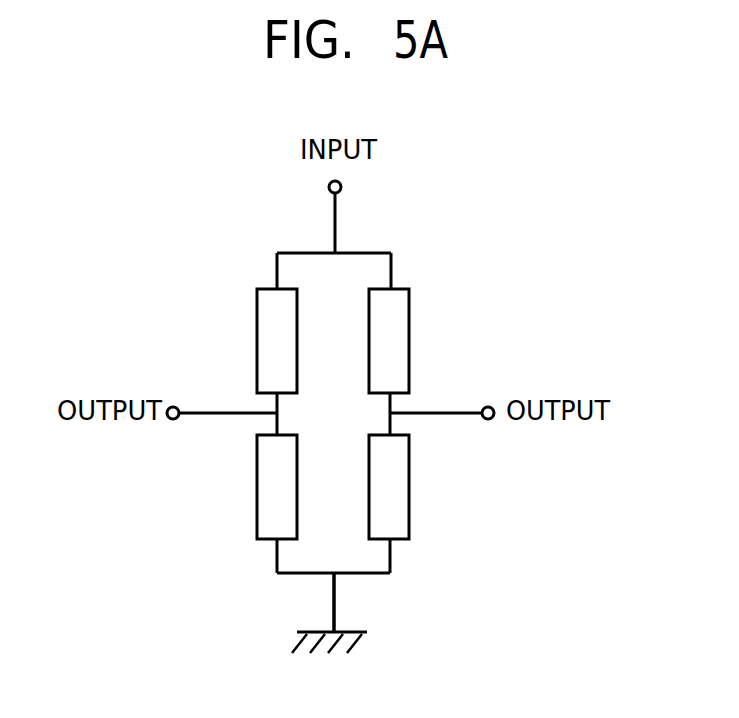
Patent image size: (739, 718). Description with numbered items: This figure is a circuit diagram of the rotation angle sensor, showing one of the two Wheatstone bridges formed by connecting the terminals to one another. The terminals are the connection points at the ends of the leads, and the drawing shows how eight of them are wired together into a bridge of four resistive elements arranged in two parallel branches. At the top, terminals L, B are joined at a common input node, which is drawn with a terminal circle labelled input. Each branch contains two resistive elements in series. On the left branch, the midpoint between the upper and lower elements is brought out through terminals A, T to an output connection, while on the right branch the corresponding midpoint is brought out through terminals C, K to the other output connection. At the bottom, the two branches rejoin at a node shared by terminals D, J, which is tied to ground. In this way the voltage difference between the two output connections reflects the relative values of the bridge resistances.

The terminal L is at (319, 202).
The terminal B is at (334, 241).
The terminal A is at (186, 398).
The terminal T is at (228, 430).
The terminal C is at (436, 395).
The terminal K is at (473, 427).
The terminal D is at (329, 623).
The terminal J is at (346, 602).